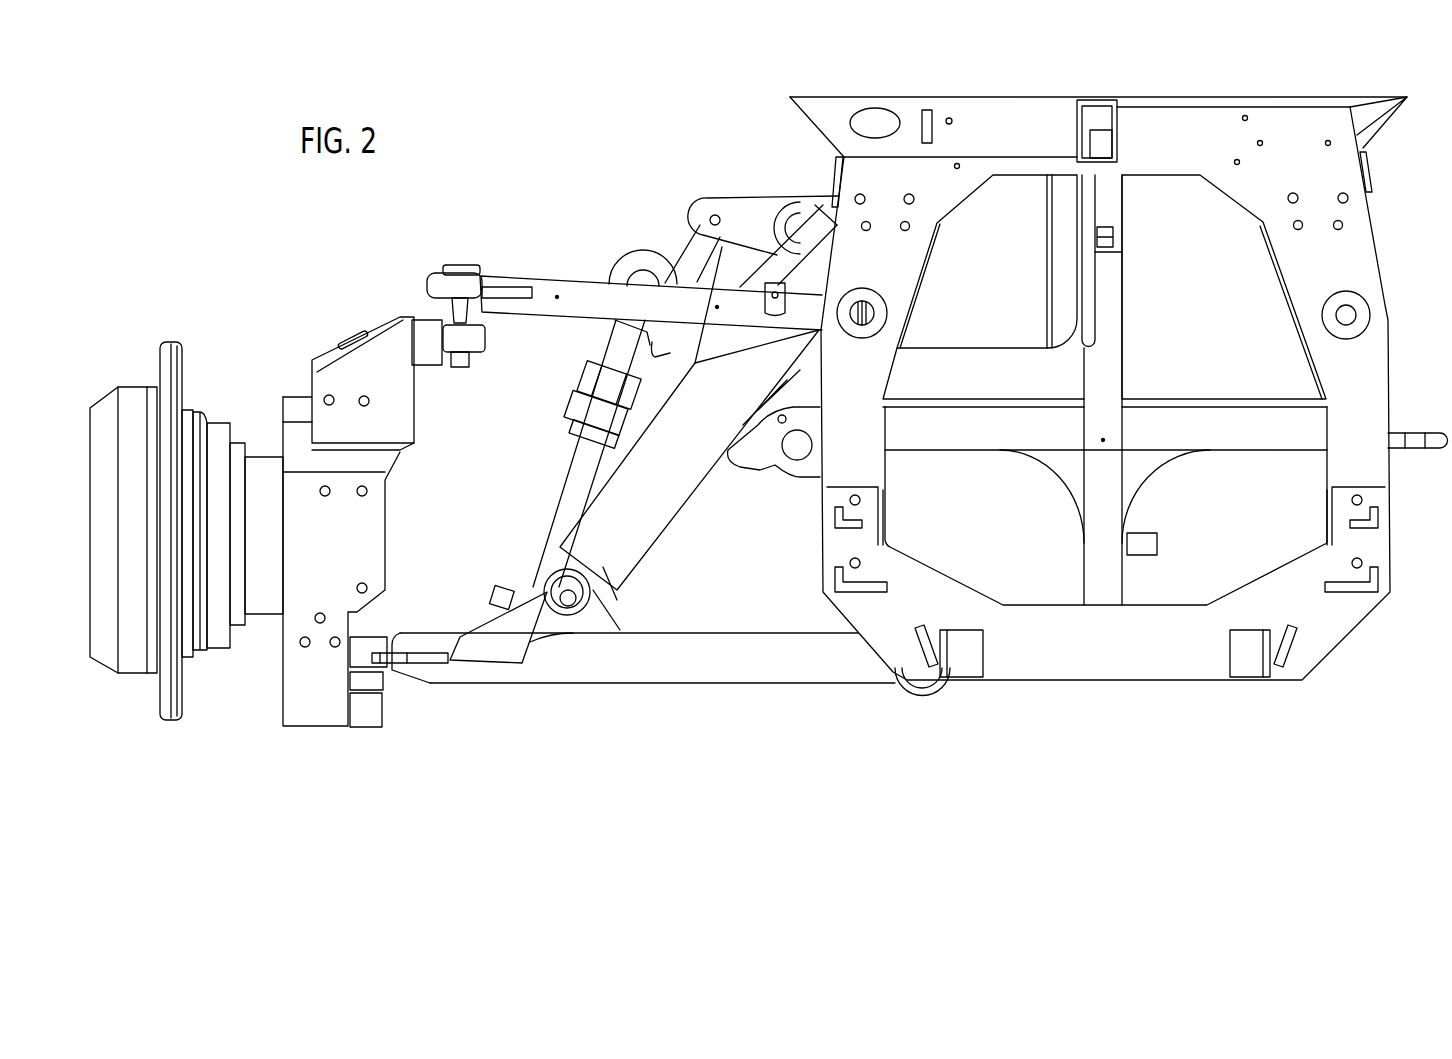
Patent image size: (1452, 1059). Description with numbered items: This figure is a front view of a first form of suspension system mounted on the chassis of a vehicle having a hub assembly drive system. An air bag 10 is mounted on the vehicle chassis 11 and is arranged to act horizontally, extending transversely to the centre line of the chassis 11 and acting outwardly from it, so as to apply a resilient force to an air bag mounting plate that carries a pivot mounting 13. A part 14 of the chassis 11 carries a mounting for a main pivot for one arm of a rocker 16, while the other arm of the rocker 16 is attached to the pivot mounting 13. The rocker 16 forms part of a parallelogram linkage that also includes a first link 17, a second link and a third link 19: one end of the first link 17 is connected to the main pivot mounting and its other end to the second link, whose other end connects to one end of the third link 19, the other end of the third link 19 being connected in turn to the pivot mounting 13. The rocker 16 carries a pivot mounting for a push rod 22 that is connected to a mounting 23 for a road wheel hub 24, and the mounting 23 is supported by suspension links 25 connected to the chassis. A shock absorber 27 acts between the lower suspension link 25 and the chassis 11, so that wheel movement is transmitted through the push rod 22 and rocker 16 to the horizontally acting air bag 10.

The air bag 10 is at (973, 327).
The vehicle chassis 11 is at (1157, 100).
The pivot mounting 13 is at (817, 200).
The part of the chassis 14 is at (840, 465).
The rocker 16 is at (663, 265).
The first link 17 is at (617, 330).
The third link 19 is at (735, 213).
The push rod 22 is at (580, 477).
The mounting for a road wheel hub 23 is at (366, 525).
The road wheel hub 24 is at (136, 658).
The suspension links 25 is at (557, 288).
The shock absorber 27 is at (633, 522).